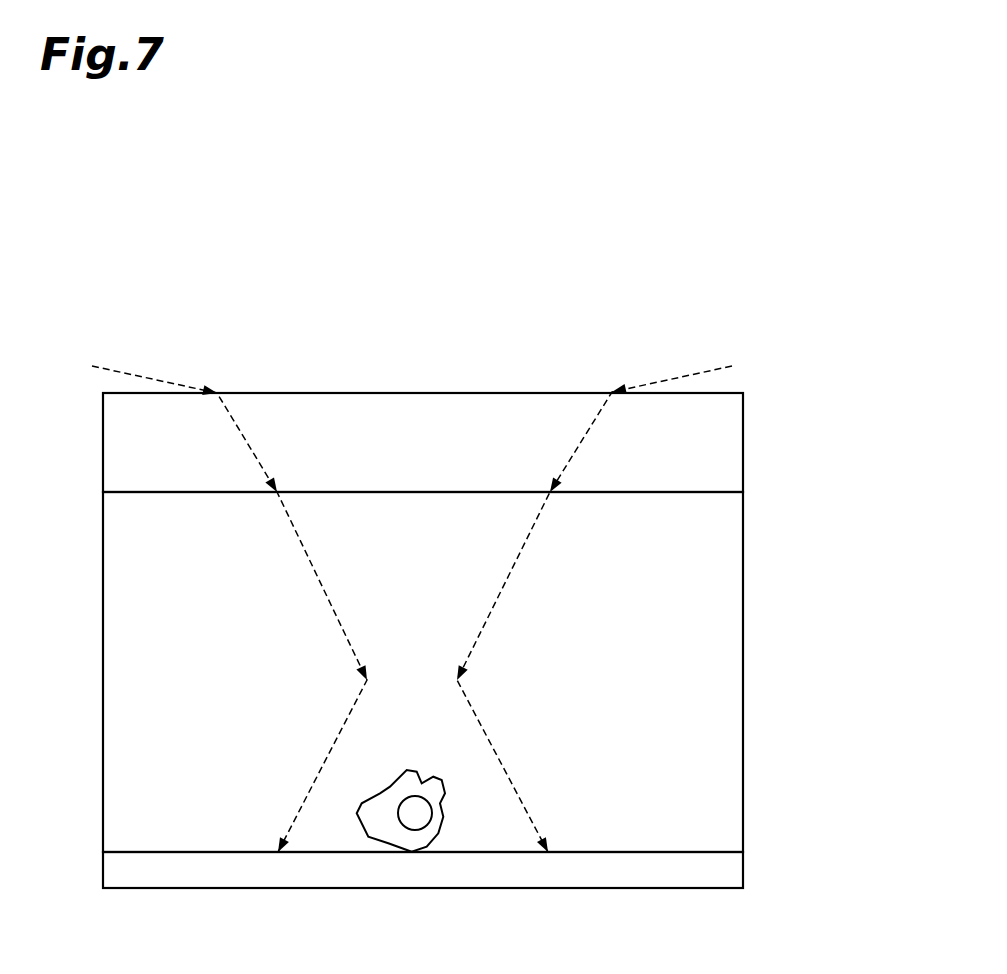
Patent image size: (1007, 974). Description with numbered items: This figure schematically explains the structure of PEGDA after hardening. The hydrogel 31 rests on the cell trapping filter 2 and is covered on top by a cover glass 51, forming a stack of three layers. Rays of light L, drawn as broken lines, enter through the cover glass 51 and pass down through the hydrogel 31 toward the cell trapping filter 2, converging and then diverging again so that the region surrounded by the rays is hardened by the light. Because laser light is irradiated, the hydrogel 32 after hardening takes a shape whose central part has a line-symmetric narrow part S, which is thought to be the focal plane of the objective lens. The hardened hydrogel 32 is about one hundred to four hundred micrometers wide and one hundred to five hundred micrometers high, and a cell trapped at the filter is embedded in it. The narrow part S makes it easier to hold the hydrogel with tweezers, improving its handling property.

The cover glass 51 is at (744, 447).
The hydrogel 31 is at (744, 602).
The cell trapping filter 2 is at (744, 863).
The narrow part S is at (462, 702).
The hydrogel after hardening 32 is at (358, 747).
The rays of light L is at (150, 378).